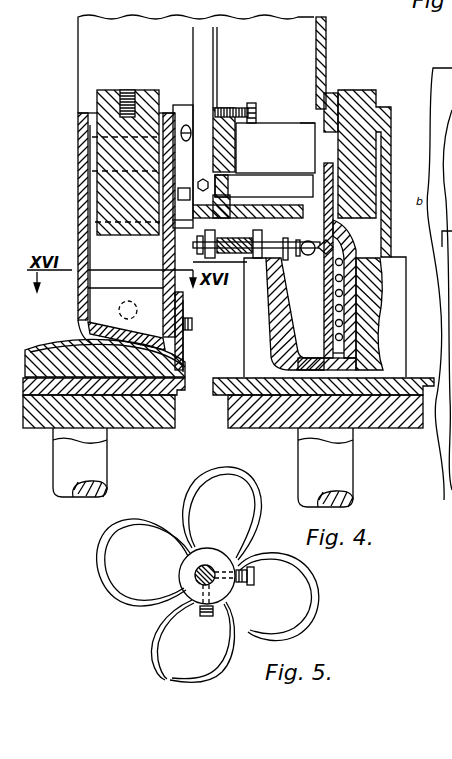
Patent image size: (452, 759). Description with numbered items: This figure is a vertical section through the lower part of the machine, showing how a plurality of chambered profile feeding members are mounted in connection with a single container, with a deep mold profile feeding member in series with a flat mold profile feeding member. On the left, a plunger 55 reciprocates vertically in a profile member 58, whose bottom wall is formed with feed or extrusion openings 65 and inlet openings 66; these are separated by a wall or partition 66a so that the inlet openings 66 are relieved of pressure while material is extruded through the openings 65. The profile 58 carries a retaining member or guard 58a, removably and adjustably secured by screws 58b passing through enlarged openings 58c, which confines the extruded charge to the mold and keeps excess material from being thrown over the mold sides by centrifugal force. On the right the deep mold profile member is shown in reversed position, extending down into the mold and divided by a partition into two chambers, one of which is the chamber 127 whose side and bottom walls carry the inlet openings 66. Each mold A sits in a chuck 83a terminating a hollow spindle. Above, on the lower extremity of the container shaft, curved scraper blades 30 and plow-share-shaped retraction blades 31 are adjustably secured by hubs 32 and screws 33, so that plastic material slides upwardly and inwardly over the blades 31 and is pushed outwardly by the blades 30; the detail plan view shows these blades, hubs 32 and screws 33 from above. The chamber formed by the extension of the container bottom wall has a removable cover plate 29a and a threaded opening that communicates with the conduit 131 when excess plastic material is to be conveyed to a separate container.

In FIG. 4, the plunger 55 is at (107, 90).
In FIG. 4, the profile member 58 is at (80, 306).
In FIG. 4, the feed or extrusion openings 65 is at (137, 314).
In FIG. 4, the wall or partition 66a is at (134, 285).
In FIG. 4, the enlarged openings 58c is at (181, 312).
In FIG. 4, the screws 58b is at (193, 323).
In FIG. 4, the retaining member or guard 58a is at (185, 352).
In FIG. 4, the hubs 32 is at (227, 107).
In FIG. 5, the hubs 32 is at (213, 548).
In FIG. 4, the screws 33 is at (256, 100).
In FIG. 5, the screws 33 is at (204, 617).
In FIG. 4, the retraction blades 31 is at (261, 178).
In FIG. 5, the retraction blades 31 is at (127, 596).
In FIG. 4, the scraper blades 30 is at (291, 124).
In FIG. 5, the scraper blades 30 is at (265, 632).
In FIG. 4, the removable cover plate 29a is at (310, 208).
In FIG. 4, the conduit 131 is at (306, 262).
In FIG. 4, the molds A is at (185, 366).
In FIG. 4, the inlet openings 66 is at (334, 308).
In FIG. 4, the chamber 127 is at (332, 234).
In FIG. 4, the chucks 83a is at (407, 422).